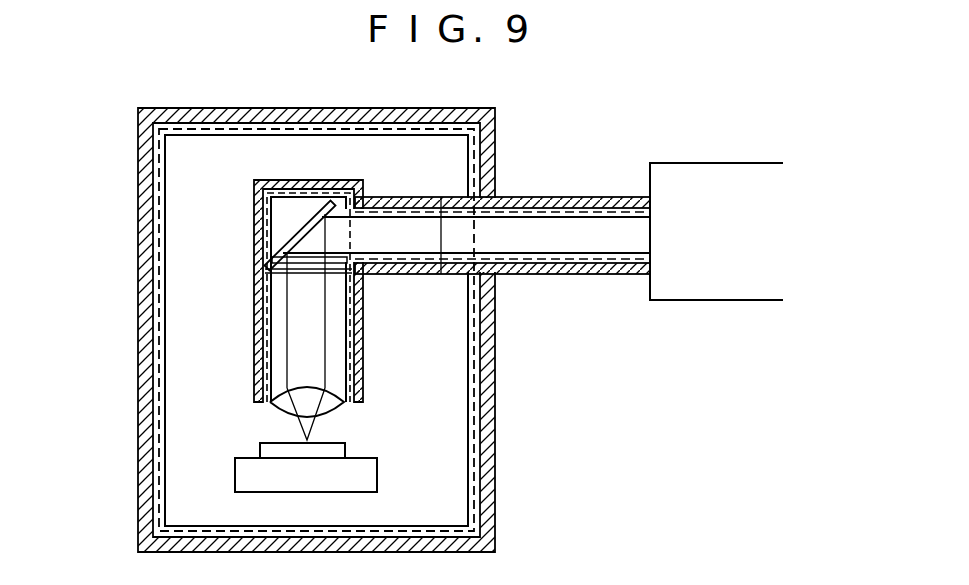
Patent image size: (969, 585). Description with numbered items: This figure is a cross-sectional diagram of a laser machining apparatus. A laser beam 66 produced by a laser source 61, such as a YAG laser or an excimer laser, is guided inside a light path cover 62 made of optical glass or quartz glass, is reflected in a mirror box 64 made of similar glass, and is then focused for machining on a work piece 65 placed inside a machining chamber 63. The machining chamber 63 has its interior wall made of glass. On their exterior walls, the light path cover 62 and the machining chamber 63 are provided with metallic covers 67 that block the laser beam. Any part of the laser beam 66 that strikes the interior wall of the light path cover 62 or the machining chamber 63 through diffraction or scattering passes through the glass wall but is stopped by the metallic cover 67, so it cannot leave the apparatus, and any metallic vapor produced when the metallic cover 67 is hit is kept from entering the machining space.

The laser source 61 is at (731, 178).
The light path cover 62 is at (357, 343).
The machining chamber 63 is at (480, 167).
The mirror box 64 is at (283, 268).
The work piece 65 is at (263, 449).
The laser beam 66 is at (287, 338).
The metallic cover 67 is at (416, 198).